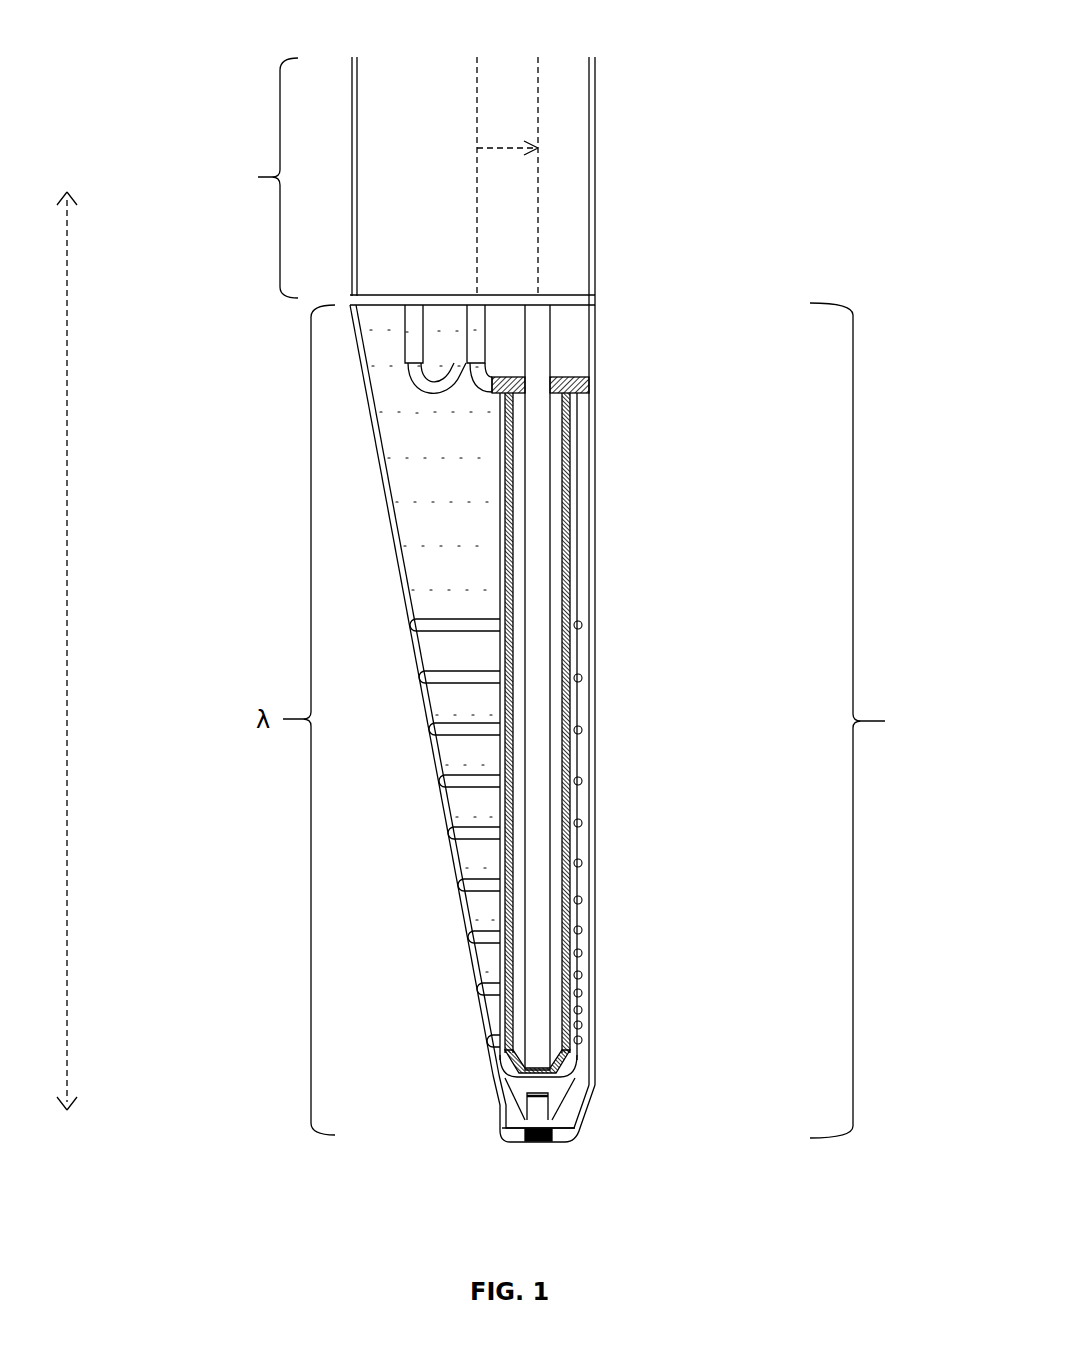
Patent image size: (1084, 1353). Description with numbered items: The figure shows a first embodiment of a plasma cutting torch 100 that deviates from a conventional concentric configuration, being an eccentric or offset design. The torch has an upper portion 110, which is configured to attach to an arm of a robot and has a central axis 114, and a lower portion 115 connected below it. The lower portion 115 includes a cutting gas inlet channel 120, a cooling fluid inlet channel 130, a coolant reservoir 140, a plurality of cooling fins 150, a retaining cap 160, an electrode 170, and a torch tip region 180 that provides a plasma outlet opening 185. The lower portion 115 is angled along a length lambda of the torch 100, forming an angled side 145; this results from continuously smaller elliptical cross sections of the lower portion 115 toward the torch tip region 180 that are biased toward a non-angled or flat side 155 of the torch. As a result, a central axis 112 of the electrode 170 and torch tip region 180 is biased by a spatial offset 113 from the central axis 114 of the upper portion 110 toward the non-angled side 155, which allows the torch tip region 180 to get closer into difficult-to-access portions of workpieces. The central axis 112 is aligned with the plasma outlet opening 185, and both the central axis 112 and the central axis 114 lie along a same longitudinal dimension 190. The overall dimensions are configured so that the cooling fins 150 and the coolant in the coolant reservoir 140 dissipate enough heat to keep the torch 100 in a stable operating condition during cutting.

The plasma cutting torch 100 is at (833, 146).
The upper portion 110 is at (252, 178).
The central axis of the electrode 112 is at (539, 80).
The spatial offset 113 is at (510, 140).
The central axis of the upper portion 114 is at (477, 118).
The lower portion 115 is at (878, 720).
The cutting gas inlet channel 120 is at (428, 325).
The cooling fluid inlet channel 130 is at (487, 328).
The coolant reservoir 140 is at (452, 485).
The angled side 145 is at (439, 799).
The cooling fins 150 is at (500, 622).
The non-angled side 155 is at (602, 773).
The retaining cap 160 is at (593, 987).
The electrode 170 is at (560, 1100).
The torch tip region 180 is at (545, 1152).
The plasma outlet opening 185 is at (530, 1143).
The longitudinal dimension 190 is at (70, 510).